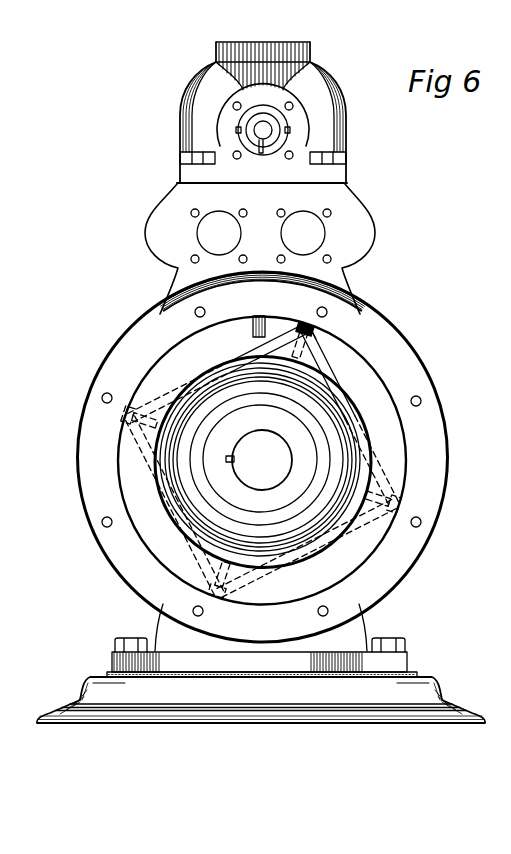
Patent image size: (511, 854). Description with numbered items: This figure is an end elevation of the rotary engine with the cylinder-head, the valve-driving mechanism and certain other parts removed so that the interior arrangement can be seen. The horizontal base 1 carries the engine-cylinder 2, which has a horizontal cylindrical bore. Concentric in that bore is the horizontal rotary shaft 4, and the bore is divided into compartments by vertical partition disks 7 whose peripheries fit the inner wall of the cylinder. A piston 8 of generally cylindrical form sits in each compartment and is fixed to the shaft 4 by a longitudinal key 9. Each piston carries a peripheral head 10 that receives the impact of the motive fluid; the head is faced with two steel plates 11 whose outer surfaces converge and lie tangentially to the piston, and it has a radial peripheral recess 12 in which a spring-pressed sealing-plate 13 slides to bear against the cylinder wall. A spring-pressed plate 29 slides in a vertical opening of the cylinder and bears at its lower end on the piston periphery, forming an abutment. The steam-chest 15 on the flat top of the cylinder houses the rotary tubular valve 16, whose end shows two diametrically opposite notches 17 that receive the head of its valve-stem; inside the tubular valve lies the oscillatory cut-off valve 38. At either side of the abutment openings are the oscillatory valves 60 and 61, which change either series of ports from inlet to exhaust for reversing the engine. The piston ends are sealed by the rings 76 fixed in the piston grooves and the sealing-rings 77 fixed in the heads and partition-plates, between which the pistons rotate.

The horizontal base 1 is at (261, 700).
The engine-cylinder 2 is at (263, 457).
The horizontal rotary shaft 4 is at (262, 460).
The vertical partition disks 7 is at (270, 459).
The piston 8 is at (309, 553).
The longitudinal key 9 is at (230, 456).
The peripheral piston-head 10 is at (312, 354).
The steel plates 11 is at (336, 362).
The radial peripheral recess 12 is at (314, 337).
The sealing-plate 13 is at (305, 324).
The steam-chest 15 is at (192, 110).
The horizontal tubular valve 16 is at (288, 119).
The notches 17 is at (237, 130).
The abutment plate 29 is at (259, 316).
The oscillatory valve 38 is at (256, 143).
The oscillatory valve 60 is at (219, 233).
The oscillatory valve 61 is at (303, 233).
The ring 76 is at (279, 514).
The sealing-rings 77 is at (185, 544).